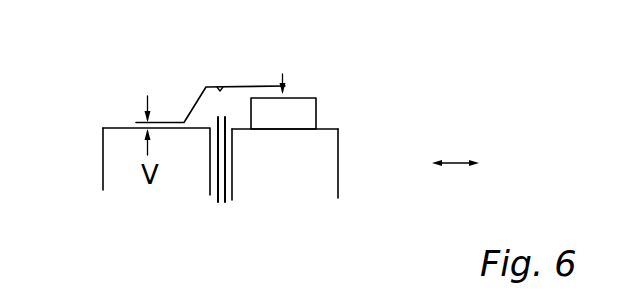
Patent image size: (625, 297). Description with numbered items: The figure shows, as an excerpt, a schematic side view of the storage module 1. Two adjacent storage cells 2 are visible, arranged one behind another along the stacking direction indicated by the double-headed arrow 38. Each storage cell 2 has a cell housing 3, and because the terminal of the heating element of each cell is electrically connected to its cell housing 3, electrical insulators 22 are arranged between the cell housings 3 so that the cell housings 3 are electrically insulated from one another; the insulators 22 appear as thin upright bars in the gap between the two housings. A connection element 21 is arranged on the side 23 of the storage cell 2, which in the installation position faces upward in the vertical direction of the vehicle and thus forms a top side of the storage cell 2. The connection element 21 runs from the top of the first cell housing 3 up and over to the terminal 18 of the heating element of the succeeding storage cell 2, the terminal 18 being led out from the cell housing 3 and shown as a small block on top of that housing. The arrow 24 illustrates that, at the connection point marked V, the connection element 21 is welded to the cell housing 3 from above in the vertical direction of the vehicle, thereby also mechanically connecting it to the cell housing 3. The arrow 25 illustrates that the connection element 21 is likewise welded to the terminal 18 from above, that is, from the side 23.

The storage module 1 is at (408, 116).
The storage cell 2 is at (100, 190).
The cell housing 3 is at (103, 160).
The terminal 18 is at (317, 113).
The connection element 21 is at (206, 87).
The electrical insulator 22 is at (217, 199).
The side 23 is at (326, 89).
The arrow 24 is at (147, 98).
The arrow 25 is at (282, 74).
The double-headed arrow 38 is at (457, 163).